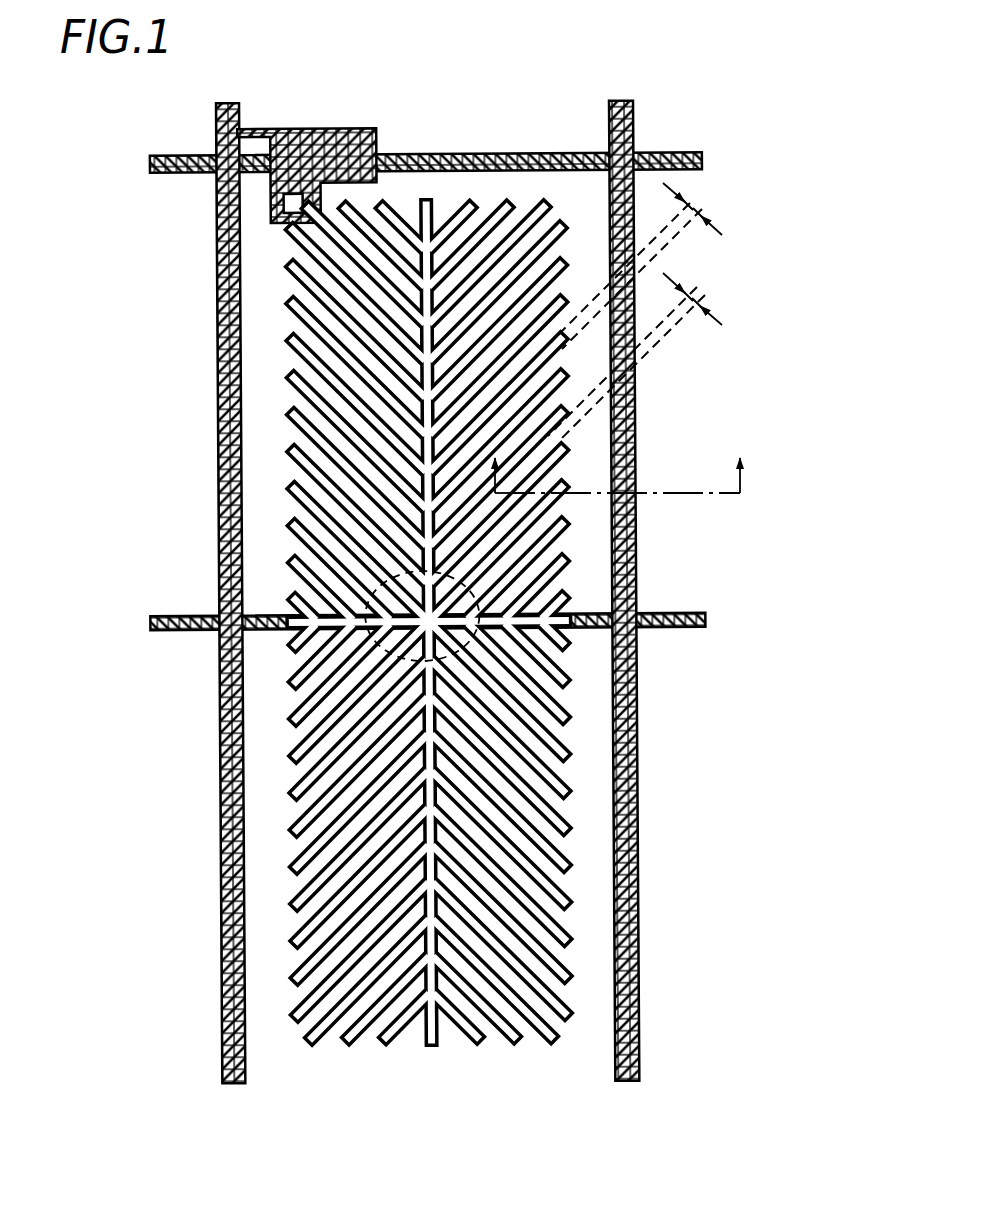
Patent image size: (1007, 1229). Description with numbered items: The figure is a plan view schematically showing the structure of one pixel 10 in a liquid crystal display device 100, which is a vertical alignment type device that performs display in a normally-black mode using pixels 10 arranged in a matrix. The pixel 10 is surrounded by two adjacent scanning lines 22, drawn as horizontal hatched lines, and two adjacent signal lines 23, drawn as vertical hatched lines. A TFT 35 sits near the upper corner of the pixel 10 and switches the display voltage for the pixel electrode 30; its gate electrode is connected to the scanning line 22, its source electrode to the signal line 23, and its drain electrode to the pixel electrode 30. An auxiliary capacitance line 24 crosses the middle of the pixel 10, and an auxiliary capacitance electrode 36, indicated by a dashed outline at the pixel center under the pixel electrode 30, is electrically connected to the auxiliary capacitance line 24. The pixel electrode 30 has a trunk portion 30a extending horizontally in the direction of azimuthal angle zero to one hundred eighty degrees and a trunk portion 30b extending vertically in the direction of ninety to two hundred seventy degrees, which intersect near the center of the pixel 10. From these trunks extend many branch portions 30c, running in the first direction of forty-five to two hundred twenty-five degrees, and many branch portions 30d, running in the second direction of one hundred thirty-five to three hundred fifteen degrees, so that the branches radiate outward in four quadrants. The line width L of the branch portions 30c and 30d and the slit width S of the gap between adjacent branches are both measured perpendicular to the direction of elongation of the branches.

The liquid crystal display device 100 is at (538, 88).
The pixel 10 is at (167, 364).
The scanning line 22 is at (685, 154).
The signal line 23 is at (640, 1043).
The auxiliary capacitance line 24 is at (705, 616).
The pixel electrode 30 is at (433, 608).
The trunk portion 30a is at (567, 617).
The trunk portion 30b is at (427, 197).
The branch portions 30c is at (563, 533).
The branch portions 30d is at (290, 383).
The TFT 35 is at (343, 128).
The auxiliary capacitance electrode 36 is at (365, 575).